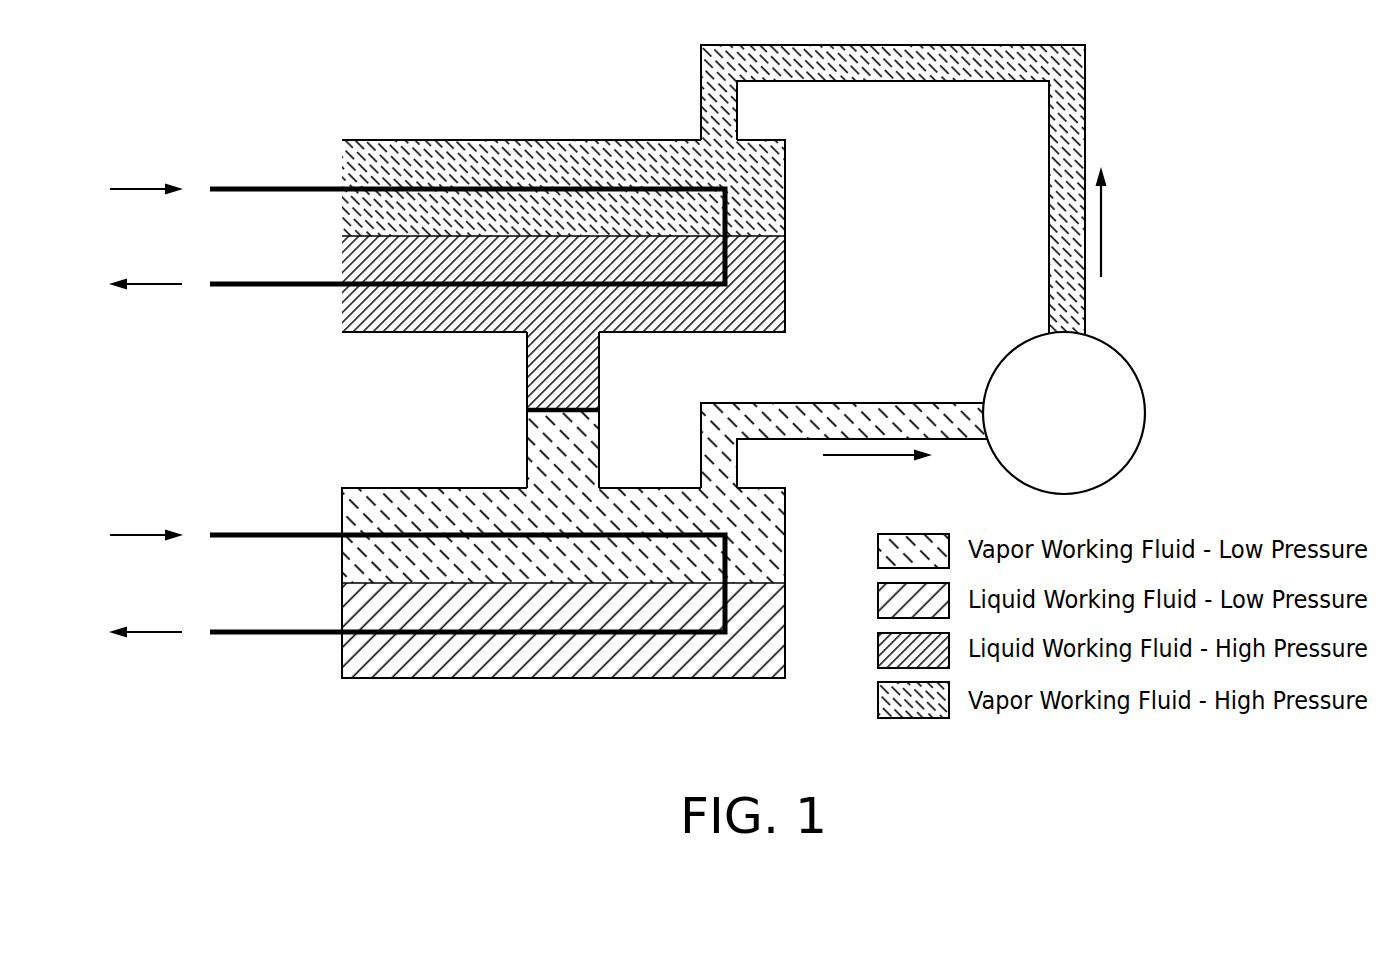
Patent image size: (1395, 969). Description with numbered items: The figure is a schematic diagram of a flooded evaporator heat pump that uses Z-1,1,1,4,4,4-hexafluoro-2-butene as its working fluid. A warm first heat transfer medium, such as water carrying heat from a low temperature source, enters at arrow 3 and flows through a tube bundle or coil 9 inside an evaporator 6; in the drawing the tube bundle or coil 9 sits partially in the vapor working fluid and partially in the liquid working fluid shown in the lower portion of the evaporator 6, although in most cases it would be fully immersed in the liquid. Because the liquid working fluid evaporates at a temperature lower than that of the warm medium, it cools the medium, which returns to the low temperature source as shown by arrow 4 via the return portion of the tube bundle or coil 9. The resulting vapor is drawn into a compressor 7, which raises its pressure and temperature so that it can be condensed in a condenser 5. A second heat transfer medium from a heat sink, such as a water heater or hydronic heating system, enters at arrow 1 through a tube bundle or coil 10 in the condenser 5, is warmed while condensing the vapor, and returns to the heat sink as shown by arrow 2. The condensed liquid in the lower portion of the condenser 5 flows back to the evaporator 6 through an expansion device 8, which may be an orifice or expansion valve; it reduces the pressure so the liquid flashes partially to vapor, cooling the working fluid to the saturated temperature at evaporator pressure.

The arrow 1 is at (132, 190).
The arrow 2 is at (132, 285).
The arrow 3 is at (132, 536).
The arrow 4 is at (132, 633).
The condenser 5 is at (511, 139).
The evaporator 6 is at (517, 680).
The compressor 7 is at (1004, 357).
The expansion device 8 is at (527, 410).
The tube bundle or coil 9 is at (284, 538).
The tube bundle or coil 10 is at (293, 191).